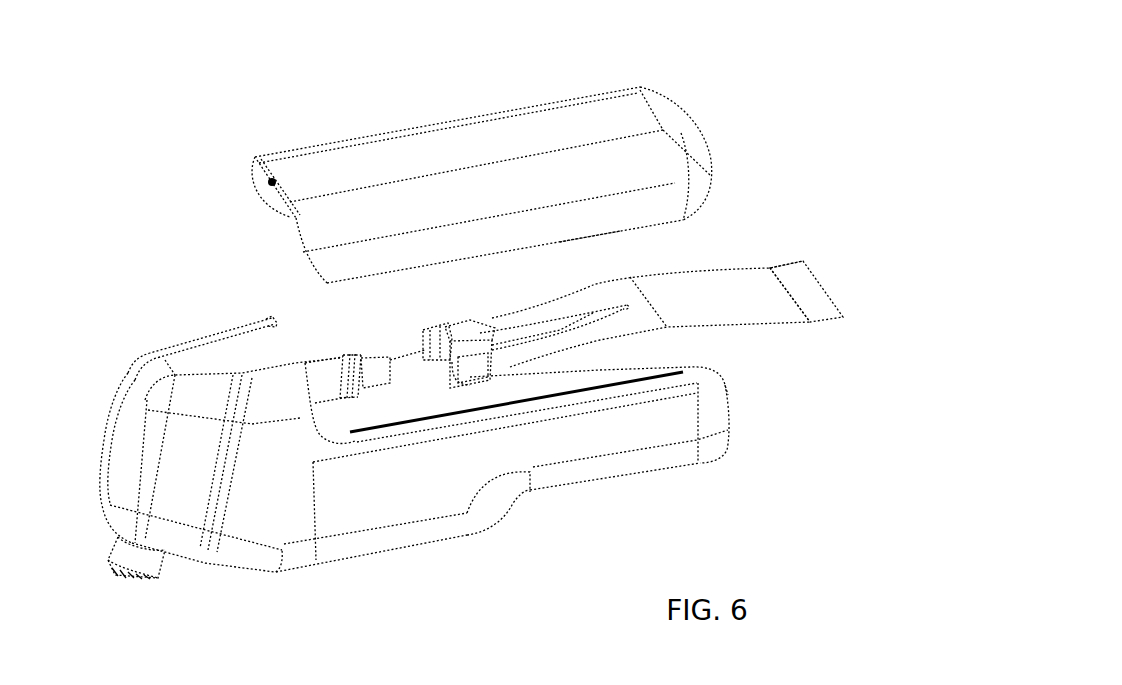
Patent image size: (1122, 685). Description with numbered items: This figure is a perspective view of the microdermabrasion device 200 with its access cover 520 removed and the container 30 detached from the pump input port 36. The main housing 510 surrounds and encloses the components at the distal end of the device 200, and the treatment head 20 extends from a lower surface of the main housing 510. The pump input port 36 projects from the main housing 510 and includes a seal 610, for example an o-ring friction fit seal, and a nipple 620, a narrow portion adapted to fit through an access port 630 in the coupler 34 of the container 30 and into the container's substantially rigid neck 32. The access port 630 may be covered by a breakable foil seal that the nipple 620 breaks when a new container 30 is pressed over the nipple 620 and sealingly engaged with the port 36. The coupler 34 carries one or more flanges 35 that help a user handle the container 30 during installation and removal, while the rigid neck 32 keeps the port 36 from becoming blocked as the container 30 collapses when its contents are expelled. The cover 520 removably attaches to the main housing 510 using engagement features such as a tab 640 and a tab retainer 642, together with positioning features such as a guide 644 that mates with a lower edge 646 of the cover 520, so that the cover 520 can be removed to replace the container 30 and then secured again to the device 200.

The device 200 is at (449, 316).
The access cover 520 is at (543, 145).
The tab 640 is at (272, 182).
The lower edge 646 is at (622, 237).
The tab retainer 642 is at (290, 336).
The pump input port 36 is at (330, 352).
The seal 610 is at (345, 355).
The nipple 620 is at (380, 360).
The access port 630 is at (446, 347).
The coupler 34 is at (465, 328).
The neck 32 is at (513, 330).
The container 30 is at (665, 347).
The flanges 35 is at (460, 372).
The main housing 510 is at (153, 467).
The treatment head 20 is at (145, 573).
The guide 644 is at (577, 390).